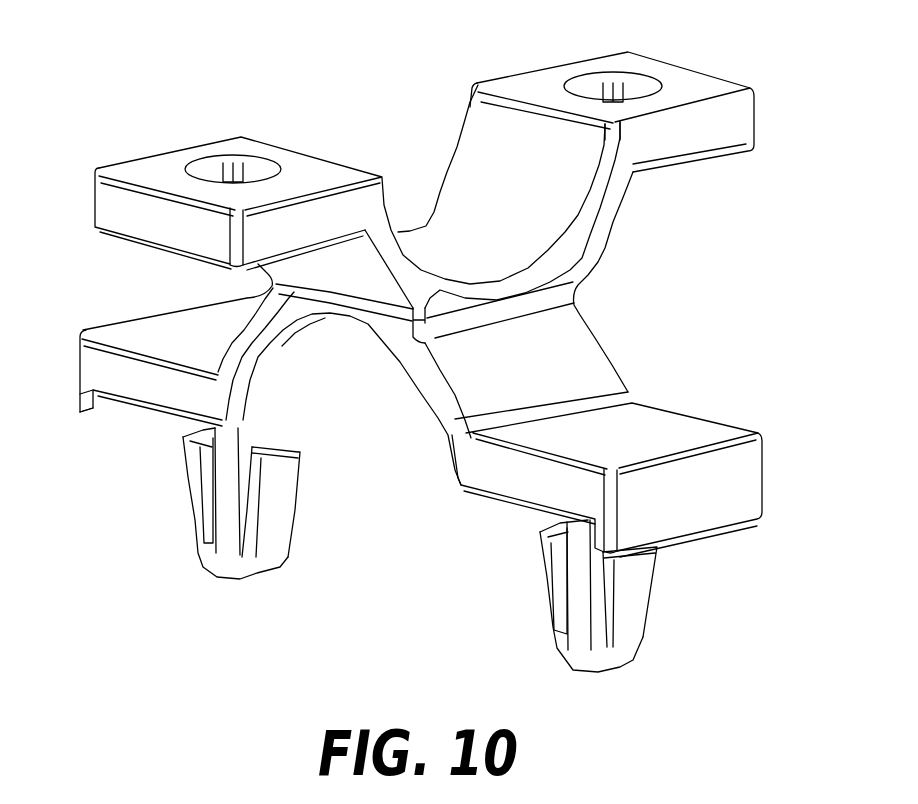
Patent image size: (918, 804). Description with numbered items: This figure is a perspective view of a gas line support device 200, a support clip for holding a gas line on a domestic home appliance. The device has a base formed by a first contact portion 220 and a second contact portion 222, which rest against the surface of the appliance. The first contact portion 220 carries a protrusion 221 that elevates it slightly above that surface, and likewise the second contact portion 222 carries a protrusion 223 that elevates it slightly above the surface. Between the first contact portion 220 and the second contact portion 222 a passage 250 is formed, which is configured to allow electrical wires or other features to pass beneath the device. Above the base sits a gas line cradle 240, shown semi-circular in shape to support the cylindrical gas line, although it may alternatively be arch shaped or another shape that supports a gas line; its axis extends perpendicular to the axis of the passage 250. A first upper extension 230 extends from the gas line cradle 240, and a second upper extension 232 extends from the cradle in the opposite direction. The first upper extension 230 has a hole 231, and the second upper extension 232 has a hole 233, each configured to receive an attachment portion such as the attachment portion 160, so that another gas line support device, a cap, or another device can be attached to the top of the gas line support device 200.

The gas line support device 200 is at (712, 294).
The first contact portion 220 is at (146, 333).
The protrusion 221 is at (97, 403).
The second contact portion 222 is at (690, 437).
The protrusion 223 is at (733, 517).
The first upper extension 230 is at (212, 168).
The hole 231 is at (233, 169).
The second upper extension 232 is at (730, 130).
The hole 233 is at (613, 87).
The gas line cradle 240 is at (432, 220).
The passage 250 is at (344, 372).
The attachment portion 160 is at (268, 547).